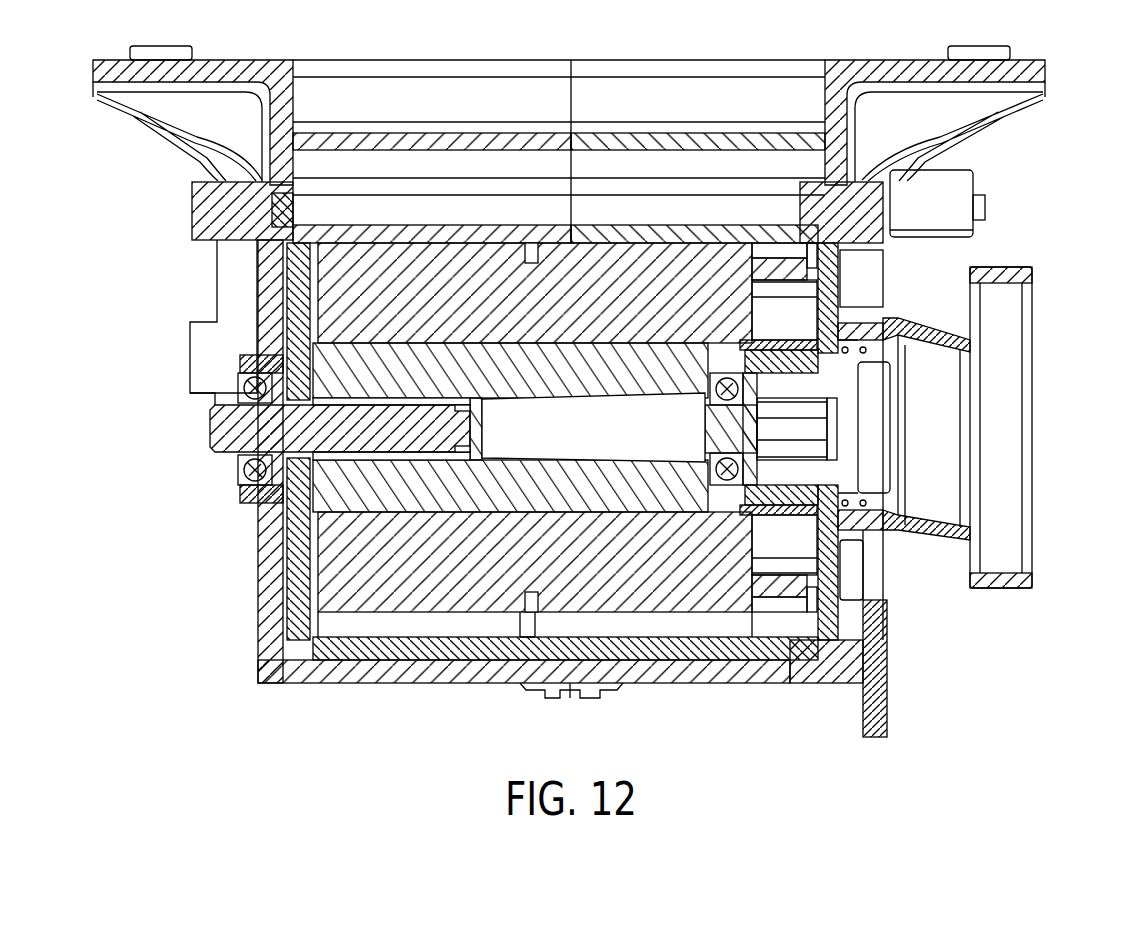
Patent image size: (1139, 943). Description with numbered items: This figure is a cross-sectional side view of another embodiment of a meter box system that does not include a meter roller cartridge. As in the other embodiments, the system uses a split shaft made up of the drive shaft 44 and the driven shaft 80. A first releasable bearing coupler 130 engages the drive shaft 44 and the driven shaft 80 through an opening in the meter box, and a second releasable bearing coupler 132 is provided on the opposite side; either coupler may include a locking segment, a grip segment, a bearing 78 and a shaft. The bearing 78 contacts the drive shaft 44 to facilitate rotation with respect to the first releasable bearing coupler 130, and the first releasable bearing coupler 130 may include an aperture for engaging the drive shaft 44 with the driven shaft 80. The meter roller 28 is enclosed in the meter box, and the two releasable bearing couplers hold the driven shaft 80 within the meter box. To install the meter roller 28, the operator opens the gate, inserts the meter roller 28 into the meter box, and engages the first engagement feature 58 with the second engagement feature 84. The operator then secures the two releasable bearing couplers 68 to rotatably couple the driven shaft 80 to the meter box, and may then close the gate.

The meter roller 28 is at (384, 521).
The drive shaft 44 is at (232, 430).
The first engagement feature 58 is at (372, 437).
The releasable bearing couplers 68 is at (142, 333).
The bearing 78 is at (240, 464).
The driven shaft 80 is at (657, 483).
The second engagement feature 84 is at (482, 430).
The first releasable bearing coupler 130 is at (201, 322).
The second releasable bearing coupler 132 is at (1004, 604).